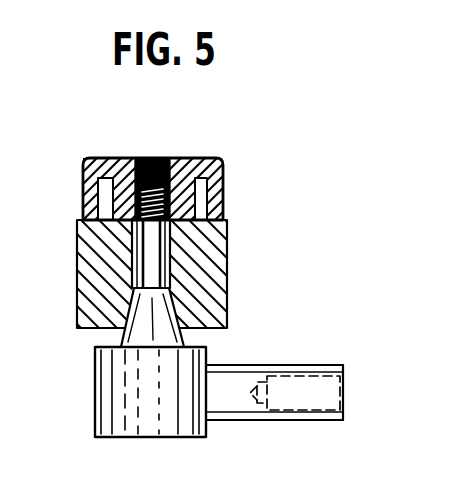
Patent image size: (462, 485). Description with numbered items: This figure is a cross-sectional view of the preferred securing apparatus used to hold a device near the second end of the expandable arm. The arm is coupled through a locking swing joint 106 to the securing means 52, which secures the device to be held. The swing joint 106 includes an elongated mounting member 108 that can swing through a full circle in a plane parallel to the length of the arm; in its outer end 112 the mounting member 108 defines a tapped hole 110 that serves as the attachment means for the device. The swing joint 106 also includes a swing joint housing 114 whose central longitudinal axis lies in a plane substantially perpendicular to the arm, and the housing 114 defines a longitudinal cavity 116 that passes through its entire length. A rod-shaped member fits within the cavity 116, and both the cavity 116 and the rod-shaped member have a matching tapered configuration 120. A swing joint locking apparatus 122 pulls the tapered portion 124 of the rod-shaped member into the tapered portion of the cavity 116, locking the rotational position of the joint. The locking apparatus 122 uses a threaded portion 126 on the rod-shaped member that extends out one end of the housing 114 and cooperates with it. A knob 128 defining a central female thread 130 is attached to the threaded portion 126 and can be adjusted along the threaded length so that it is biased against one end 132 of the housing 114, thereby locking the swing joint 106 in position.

The securing means 52 is at (358, 396).
The locking swing joint 106 is at (50, 270).
The elongated mounting member 108 is at (298, 365).
The tapped hole 110 is at (302, 398).
The outer end 112 is at (343, 368).
The swing joint housing 114 is at (227, 308).
The longitudinal cavity 116 is at (200, 262).
The matching tapered configuration 120 is at (125, 312).
The swing joint locking apparatus 122 is at (68, 176).
The tapered portion 124 is at (140, 348).
The threaded portion 126 is at (221, 160).
The knob 128 is at (124, 158).
The central female thread 130 is at (168, 158).
The end of swing joint housing 132 is at (223, 198).